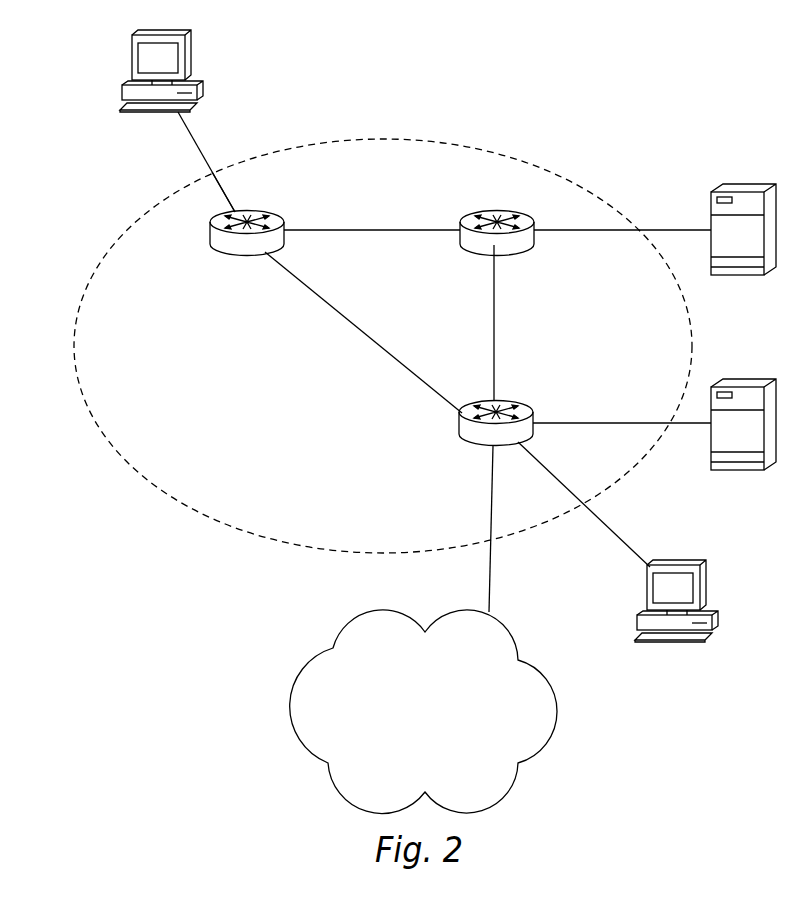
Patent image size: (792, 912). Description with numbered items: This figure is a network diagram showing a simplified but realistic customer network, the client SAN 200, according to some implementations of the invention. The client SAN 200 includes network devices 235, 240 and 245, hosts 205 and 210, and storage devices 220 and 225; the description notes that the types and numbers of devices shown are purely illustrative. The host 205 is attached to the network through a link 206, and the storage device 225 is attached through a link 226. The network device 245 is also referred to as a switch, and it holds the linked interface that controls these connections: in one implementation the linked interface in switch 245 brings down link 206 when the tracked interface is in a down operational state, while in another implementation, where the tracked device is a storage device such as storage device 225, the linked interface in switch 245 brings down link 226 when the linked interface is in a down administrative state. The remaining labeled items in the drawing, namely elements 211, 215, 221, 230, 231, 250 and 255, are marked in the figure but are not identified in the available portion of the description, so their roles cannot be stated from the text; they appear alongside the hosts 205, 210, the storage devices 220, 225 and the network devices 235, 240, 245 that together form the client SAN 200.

The client SAN 200 is at (477, 74).
The host 205 is at (650, 565).
The link 206 is at (625, 548).
The host 210 is at (132, 72).
The link to client computer 211 is at (178, 132).
The local network 215 is at (172, 468).
The storage device 220 is at (722, 192).
The link to server 221 is at (708, 232).
The storage device 225 is at (760, 395).
The link 226 is at (708, 420).
The Internet 230 is at (334, 648).
The link to Internet 231 is at (489, 581).
The network device 235 is at (233, 250).
The network device 240 is at (463, 243).
The network device 245 is at (480, 445).
The router 250 is at (207, 230).
The router interface 255 is at (217, 180).